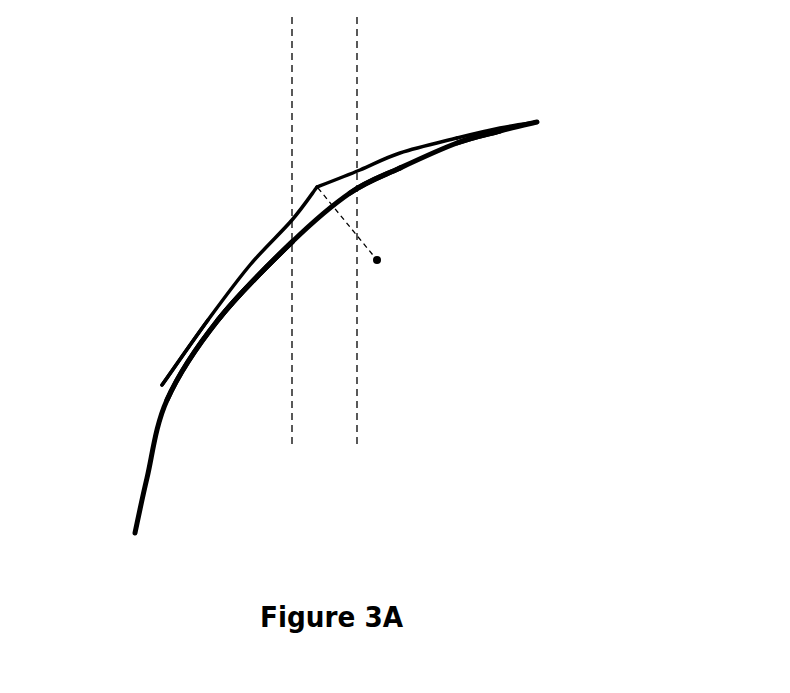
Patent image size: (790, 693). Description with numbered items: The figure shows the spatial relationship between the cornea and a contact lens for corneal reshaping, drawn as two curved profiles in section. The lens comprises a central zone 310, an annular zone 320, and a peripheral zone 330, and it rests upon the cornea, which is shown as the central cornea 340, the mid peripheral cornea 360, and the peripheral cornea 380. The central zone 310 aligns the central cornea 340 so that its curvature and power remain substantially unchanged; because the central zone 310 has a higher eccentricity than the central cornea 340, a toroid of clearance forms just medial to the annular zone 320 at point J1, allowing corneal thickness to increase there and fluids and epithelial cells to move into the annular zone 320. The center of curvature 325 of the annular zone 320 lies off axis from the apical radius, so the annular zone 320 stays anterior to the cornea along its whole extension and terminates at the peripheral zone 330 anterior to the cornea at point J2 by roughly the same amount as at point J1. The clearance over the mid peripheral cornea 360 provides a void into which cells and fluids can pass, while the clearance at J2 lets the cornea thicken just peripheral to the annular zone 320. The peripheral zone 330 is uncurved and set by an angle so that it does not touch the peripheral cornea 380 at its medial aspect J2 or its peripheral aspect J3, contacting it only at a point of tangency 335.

The central zone 310 is at (423, 132).
The annular zone 320 is at (330, 167).
The center of curvature 325 is at (381, 263).
The peripheral zone 330 is at (235, 273).
The point of tangency 335 is at (220, 298).
The central cornea 340 is at (457, 153).
The mid peripheral cornea 360 is at (312, 232).
The peripheral cornea 380 is at (215, 340).
The point J1 is at (363, 195).
The point J2 is at (280, 258).
The point J3 is at (167, 392).